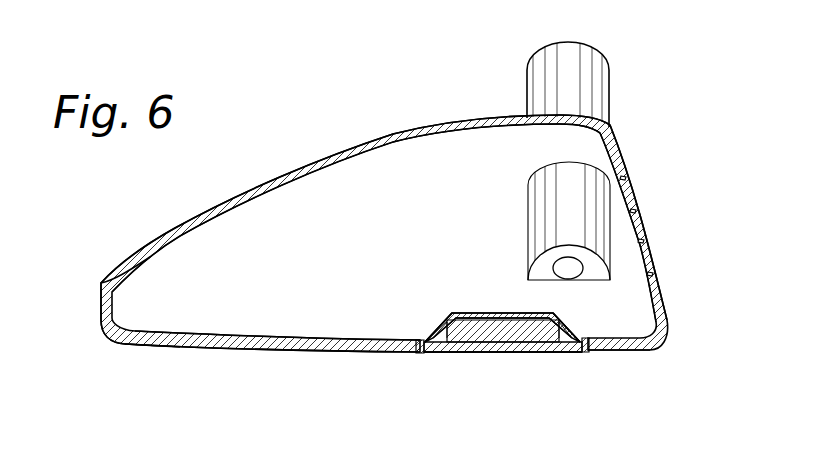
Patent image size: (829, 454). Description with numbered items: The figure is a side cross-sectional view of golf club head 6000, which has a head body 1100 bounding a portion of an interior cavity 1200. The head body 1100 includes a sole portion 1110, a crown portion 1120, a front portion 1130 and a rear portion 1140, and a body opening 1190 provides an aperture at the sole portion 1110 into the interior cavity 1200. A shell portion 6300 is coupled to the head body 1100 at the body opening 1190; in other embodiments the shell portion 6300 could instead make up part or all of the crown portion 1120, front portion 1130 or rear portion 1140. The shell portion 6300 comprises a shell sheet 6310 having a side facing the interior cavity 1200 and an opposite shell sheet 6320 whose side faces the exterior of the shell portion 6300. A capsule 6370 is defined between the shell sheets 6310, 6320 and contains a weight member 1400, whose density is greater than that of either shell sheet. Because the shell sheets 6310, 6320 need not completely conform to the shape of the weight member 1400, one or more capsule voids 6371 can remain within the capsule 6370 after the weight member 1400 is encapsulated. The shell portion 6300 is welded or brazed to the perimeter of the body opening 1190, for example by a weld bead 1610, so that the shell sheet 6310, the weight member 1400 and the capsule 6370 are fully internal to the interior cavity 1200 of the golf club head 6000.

The golf club head 6000 is at (219, 414).
The head body 1100 is at (170, 230).
The sole portion 1110 is at (315, 349).
The crown portion 1120 is at (394, 134).
The front portion 1130 is at (665, 199).
The rear portion 1140 is at (101, 302).
The body opening 1190 is at (548, 360).
The interior cavity 1200 is at (246, 220).
The weight member 1400 is at (528, 318).
The weld bead 1610 is at (420, 354).
The shell portion 6300 is at (487, 354).
The shell sheet 6310 is at (502, 313).
The shell sheet 6320 is at (448, 354).
The capsule 6370 is at (430, 339).
The capsule void 6371 is at (572, 335).